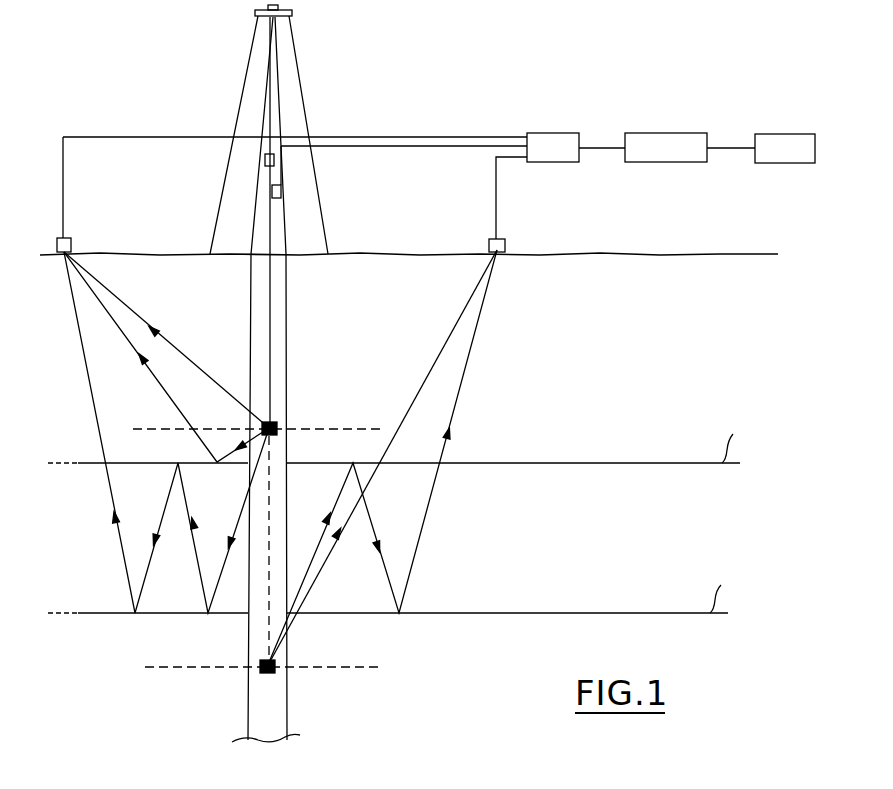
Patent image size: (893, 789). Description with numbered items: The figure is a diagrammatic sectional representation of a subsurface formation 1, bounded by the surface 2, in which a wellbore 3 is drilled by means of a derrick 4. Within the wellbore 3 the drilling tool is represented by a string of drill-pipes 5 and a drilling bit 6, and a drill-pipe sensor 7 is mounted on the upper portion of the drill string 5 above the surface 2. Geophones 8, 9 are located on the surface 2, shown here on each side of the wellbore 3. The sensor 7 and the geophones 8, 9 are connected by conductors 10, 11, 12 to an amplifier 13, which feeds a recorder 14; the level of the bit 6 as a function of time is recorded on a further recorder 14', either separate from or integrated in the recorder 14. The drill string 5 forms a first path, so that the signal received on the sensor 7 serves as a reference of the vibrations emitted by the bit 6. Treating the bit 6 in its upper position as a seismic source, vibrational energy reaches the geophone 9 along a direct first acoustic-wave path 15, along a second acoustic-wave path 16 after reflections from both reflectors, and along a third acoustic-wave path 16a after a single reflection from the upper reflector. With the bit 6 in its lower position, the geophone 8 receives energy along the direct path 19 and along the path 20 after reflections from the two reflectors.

The subsurface formation 1 is at (704, 357).
The surface 2 is at (737, 254).
The wellbore 3 is at (287, 345).
The derrick 4 is at (298, 72).
The string of drill-pipes 5 is at (272, 283).
The drilling bit 6 is at (277, 426).
The drill-pipe sensor 7 is at (282, 191).
The geophone 8 is at (505, 246).
The geophone 9 is at (72, 245).
The conductor 10 is at (405, 139).
The conductor 11 is at (496, 185).
The conductor 12 is at (63, 172).
The amplifier 13 is at (548, 143).
The recorder 14 is at (643, 125).
The recorder 14' is at (761, 126).
The first acoustic-wave path 15 is at (198, 368).
The second acoustic-wave path 16 is at (93, 403).
The third acoustic-wave path 16a is at (156, 381).
The direct path 19 is at (433, 363).
The path 20 is at (466, 372).